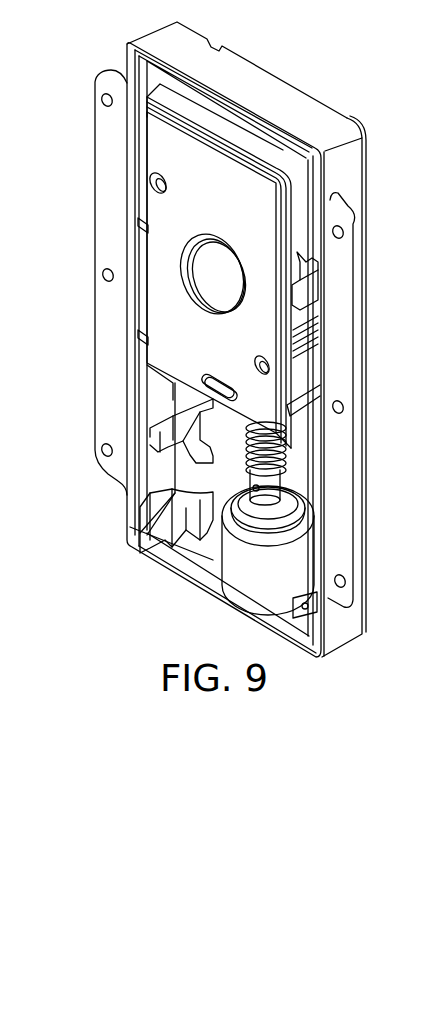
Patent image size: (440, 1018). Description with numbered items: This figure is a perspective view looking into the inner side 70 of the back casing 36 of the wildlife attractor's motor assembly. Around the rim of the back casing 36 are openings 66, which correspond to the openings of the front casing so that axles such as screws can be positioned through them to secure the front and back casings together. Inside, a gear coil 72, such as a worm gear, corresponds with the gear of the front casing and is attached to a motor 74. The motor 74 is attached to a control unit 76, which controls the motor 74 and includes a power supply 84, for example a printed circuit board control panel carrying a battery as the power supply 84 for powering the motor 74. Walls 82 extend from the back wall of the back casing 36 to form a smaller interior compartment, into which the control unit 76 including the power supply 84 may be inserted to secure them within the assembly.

The back casing 36 is at (80, 250).
The openings 66 is at (104, 106).
The inner side 70 is at (127, 213).
The gear coil 72 is at (287, 490).
The motor 74 is at (242, 579).
The control unit 76 is at (240, 212).
The walls 82 is at (255, 132).
The power supply 84 is at (298, 253).